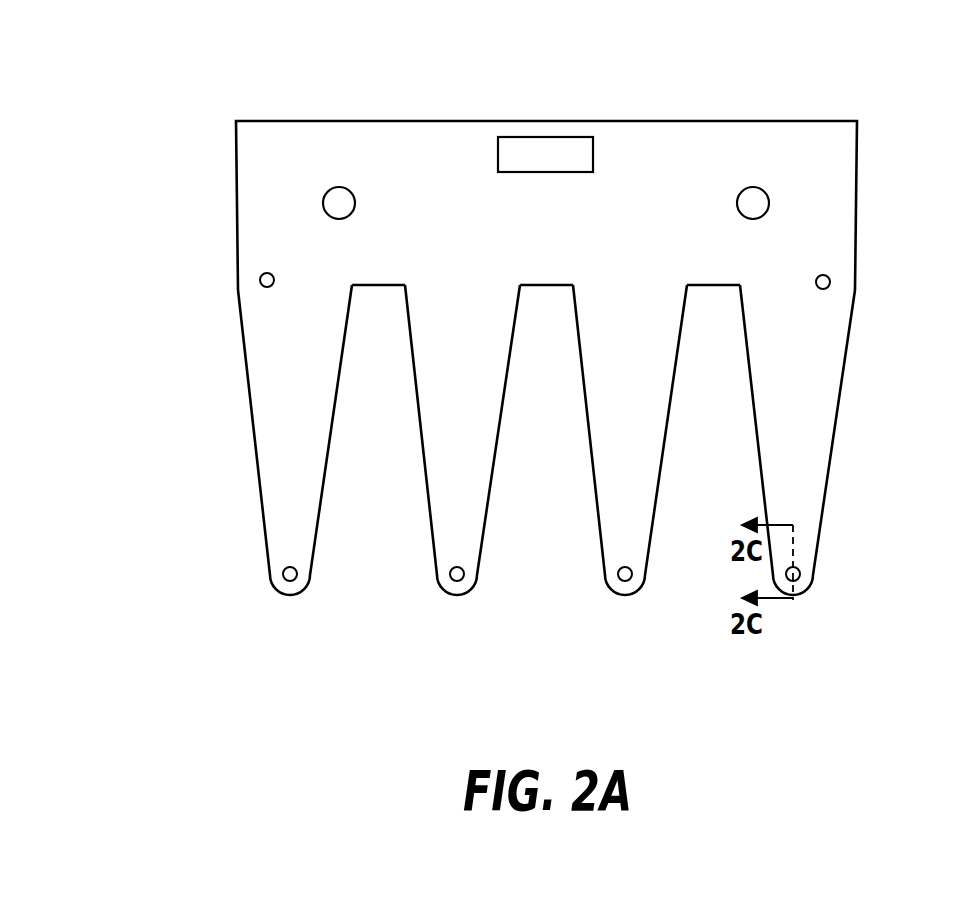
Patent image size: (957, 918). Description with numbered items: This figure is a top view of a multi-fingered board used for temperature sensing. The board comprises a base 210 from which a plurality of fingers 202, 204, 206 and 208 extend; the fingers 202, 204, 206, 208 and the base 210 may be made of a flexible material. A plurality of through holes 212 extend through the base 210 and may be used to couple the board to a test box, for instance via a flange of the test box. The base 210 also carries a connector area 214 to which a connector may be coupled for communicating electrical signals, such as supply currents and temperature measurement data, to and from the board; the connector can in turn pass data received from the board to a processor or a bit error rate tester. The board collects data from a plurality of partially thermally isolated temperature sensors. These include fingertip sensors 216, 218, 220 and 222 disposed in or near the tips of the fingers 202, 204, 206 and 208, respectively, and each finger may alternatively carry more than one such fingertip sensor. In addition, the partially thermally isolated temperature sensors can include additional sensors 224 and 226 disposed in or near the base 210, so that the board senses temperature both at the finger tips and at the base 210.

The finger 202 is at (331, 430).
The finger 204 is at (500, 430).
The finger 206 is at (670, 407).
The finger 208 is at (836, 430).
The base 210 is at (208, 120).
The through holes 212 is at (355, 203).
The connector area 214 is at (547, 137).
The fingertip sensor 216 is at (276, 577).
The fingertip sensor 218 is at (443, 577).
The fingertip sensor 220 is at (611, 577).
The fingertip sensor 222 is at (812, 577).
The additional sensor 224 is at (274, 280).
The additional sensor 226 is at (816, 282).